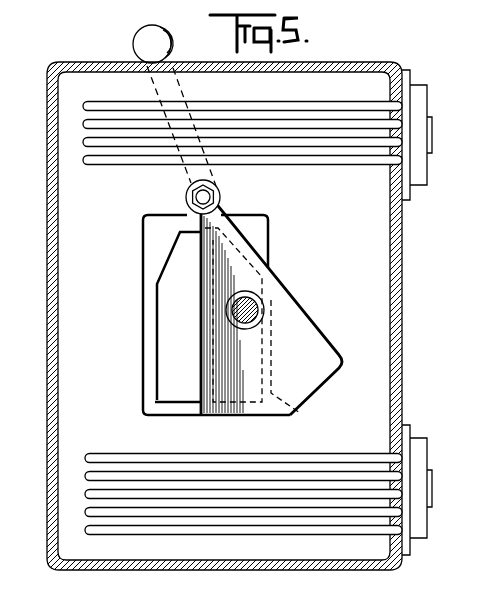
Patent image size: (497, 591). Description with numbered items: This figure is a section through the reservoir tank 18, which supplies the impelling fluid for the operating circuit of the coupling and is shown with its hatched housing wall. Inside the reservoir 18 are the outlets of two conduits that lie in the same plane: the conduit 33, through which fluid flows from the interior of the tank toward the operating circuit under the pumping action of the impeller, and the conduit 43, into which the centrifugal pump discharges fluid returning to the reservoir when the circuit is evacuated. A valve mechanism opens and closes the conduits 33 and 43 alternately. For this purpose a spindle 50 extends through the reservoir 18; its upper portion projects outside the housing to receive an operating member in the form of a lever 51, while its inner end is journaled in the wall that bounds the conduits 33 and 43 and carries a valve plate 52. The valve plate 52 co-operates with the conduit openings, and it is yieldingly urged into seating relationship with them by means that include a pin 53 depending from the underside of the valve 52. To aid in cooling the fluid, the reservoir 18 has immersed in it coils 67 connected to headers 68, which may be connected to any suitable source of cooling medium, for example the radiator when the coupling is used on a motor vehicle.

The reservoir tank 18 is at (60, 326).
The conduit 33 is at (162, 364).
The conduit 43 is at (267, 330).
The spindle 50 is at (205, 197).
The lever 51 is at (133, 43).
The valve plate 52 is at (314, 336).
The pin 53 is at (249, 308).
The coils 67 is at (338, 156).
The headers 68 is at (427, 185).